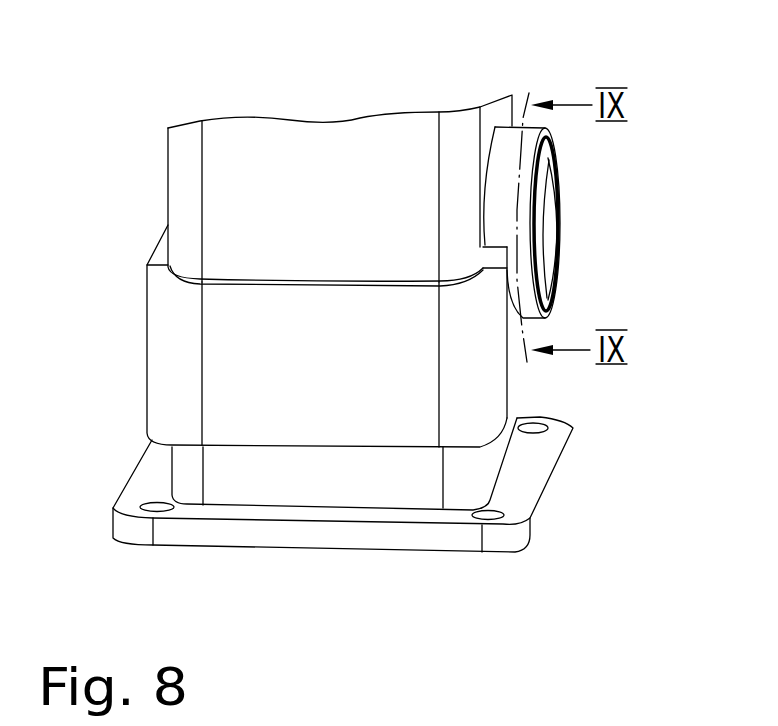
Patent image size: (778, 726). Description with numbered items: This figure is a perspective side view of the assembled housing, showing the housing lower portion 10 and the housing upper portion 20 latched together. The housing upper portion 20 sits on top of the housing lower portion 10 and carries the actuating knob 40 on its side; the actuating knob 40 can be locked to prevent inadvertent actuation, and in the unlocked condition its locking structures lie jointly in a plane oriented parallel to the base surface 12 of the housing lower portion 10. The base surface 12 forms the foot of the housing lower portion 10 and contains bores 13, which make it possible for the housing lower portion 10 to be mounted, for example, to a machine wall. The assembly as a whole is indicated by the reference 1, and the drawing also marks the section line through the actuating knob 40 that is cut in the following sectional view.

The plug connector housing assembly 1 is at (158, 90).
The housing lower portion 10 is at (254, 482).
The base surface 12 is at (532, 467).
The bores 13 is at (548, 429).
The housing upper portion 20 is at (278, 169).
The actuating knob 40 is at (545, 238).